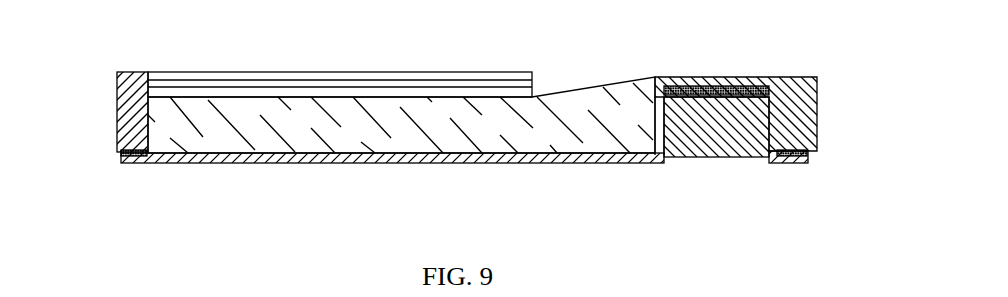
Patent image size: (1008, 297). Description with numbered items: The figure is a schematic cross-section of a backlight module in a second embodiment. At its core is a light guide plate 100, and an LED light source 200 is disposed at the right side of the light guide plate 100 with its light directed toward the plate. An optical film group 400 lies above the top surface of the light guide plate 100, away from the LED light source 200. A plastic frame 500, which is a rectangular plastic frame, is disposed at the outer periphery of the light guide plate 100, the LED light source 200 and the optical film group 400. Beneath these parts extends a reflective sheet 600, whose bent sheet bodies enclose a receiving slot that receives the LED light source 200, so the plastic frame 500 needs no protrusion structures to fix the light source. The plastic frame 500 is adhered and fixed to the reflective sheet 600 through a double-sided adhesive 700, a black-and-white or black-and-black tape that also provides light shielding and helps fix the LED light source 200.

The light guide plate 100 is at (292, 138).
The LED light source 200 is at (733, 148).
The optical film group 400 is at (298, 88).
The plastic frame 500 is at (133, 109).
The reflective sheet 600 is at (502, 168).
The double-sided adhesive 700 is at (121, 153).